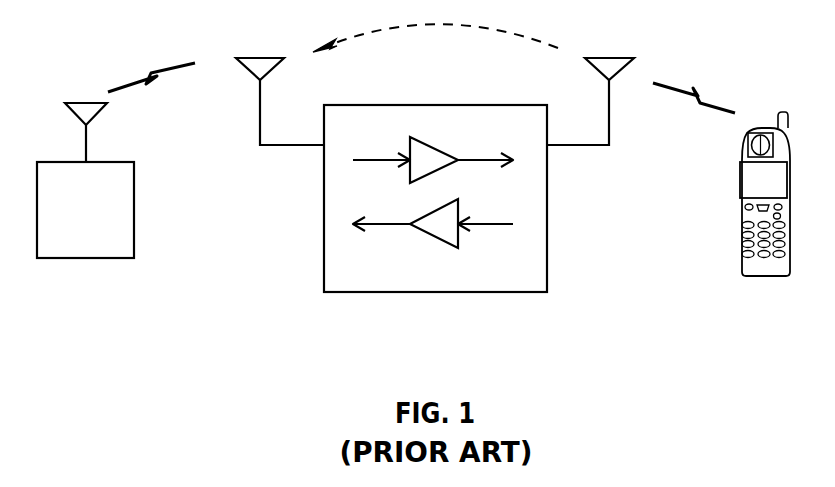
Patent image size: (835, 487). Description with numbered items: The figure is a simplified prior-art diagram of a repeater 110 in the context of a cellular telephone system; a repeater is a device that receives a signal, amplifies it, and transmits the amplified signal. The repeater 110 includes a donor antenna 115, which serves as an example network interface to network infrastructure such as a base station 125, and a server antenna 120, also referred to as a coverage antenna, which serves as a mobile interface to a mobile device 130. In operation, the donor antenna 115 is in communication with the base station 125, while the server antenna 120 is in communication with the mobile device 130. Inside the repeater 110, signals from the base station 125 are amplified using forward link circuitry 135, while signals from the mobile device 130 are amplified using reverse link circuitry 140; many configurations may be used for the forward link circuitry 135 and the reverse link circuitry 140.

The repeater 110 is at (482, 292).
The donor antenna 115 is at (270, 70).
The server antenna 120 is at (597, 68).
The base station 125 is at (100, 258).
The mobile device 130 is at (765, 276).
The forward link circuitry 135 is at (435, 145).
The reverse link circuitry 140 is at (440, 240).